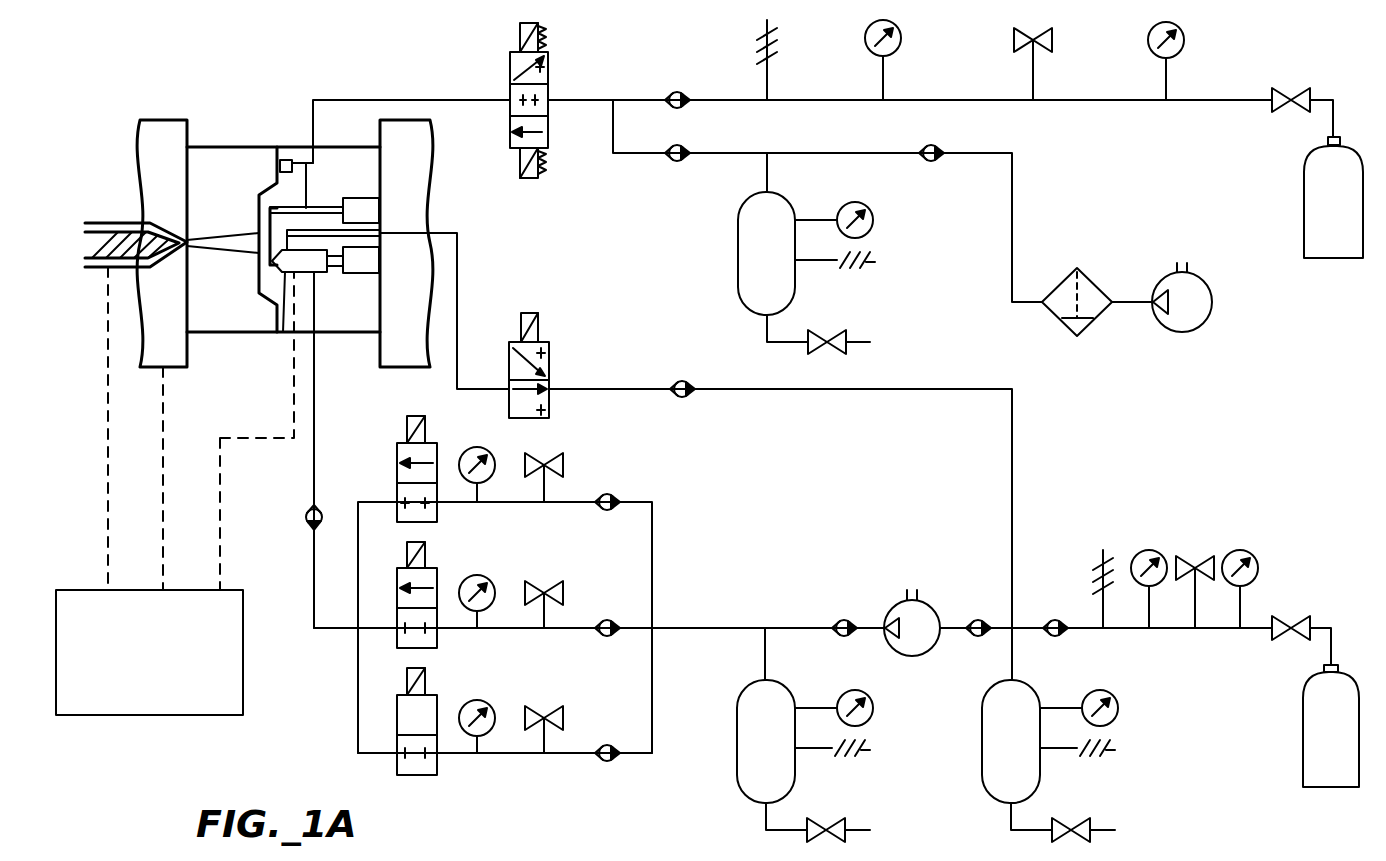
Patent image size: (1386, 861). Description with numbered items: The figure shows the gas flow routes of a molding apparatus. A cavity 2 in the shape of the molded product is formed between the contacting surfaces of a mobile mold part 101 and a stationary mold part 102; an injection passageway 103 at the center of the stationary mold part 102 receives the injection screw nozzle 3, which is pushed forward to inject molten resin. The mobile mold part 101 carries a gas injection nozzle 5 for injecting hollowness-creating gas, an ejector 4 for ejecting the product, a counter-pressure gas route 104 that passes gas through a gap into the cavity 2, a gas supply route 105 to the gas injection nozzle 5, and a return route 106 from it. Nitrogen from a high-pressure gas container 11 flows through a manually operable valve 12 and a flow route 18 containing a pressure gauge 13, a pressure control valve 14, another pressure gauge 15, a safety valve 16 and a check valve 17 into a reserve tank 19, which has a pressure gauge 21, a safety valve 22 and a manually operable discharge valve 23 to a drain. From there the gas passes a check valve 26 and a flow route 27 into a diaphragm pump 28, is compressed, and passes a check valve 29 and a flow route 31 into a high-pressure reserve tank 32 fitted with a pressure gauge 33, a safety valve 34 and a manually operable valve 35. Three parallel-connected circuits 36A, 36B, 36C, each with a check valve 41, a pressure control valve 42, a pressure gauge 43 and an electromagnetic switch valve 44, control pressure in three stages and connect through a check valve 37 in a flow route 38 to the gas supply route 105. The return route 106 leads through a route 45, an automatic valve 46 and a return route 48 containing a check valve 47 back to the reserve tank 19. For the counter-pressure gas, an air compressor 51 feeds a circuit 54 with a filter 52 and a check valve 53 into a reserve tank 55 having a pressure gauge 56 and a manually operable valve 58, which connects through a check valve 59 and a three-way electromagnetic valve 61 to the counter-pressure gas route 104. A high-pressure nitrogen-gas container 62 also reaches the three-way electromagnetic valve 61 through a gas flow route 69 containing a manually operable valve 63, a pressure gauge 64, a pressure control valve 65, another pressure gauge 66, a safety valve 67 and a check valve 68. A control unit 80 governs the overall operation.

The cavity 2 is at (258, 207).
The injection screw nozzle 3 is at (122, 223).
The ejector 4 is at (306, 163).
The gas injection nozzle 5 is at (283, 313).
The high-pressure gas container 11 is at (1303, 740).
The manually operable valve 12 is at (1287, 617).
The pressure gauge 13 is at (1255, 555).
The pressure control valve 14 is at (1205, 557).
The pressure gauge 15 is at (1145, 550).
The safety valve 16 is at (1100, 556).
The check valve 17 is at (1060, 615).
The flow route 18 is at (1030, 632).
The reserve tank 19 is at (982, 775).
The pressure gauge 21 is at (1118, 708).
The safety valve 22 is at (1112, 748).
The manually operable discharge valve 23 is at (1064, 820).
The check valve 26 is at (985, 615).
The flow route 27 is at (960, 632).
The diaphragm pump 28 is at (895, 600).
The check valve 29 is at (845, 615).
The flow route 31 is at (808, 627).
The high-pressure reserve tank 32 is at (737, 737).
The pressure gauge 33 is at (874, 708).
The safety valve 34 is at (868, 748).
The manually operable valve 35 is at (818, 820).
The parallel-connected circuit 36A is at (653, 553).
The parallel-connected circuit 36B is at (653, 625).
The parallel-connected circuit 36C is at (653, 688).
The check valve 37 is at (305, 517).
The flow route 38 is at (313, 462).
The check valve 41 is at (614, 497).
The pressure control valve 42 is at (535, 460).
The pressure gauge 43 is at (488, 450).
The electromagnetic switch valve 44 is at (397, 475).
The route 45 is at (459, 280).
The automatic valve 46 is at (550, 362).
The check valve 47 is at (675, 394).
The return route 48 is at (808, 392).
The air compressor 51 is at (1208, 285).
The filter 52 is at (1095, 283).
The check valve 53 is at (940, 150).
The circuit 54 is at (808, 152).
The reserve tank 55 is at (738, 243).
The pressure gauge 56 is at (873, 222).
The manually operable valve 58 is at (818, 333).
The check valve 59 is at (690, 148).
The three-way electromagnetic valve 61 is at (550, 72).
The high-pressure nitrogen-gas container 62 is at (478, 100).
The manually operable valve 63 is at (1290, 88).
The pressure gauge 64 is at (1182, 52).
The pressure control valve 65 is at (1040, 34).
The pressure gauge 66 is at (898, 50).
The safety valve 67 is at (762, 32).
The check valve 68 is at (680, 93).
The gas flow route 69 is at (588, 100).
The control unit 80 is at (150, 715).
The mobile mold part 101 is at (337, 323).
The stationary mold part 102 is at (233, 313).
The injection passageway 103 is at (248, 237).
The counter-pressure gas route 104 is at (292, 160).
The gas supply route 105 is at (316, 322).
The return route 106 is at (331, 230).